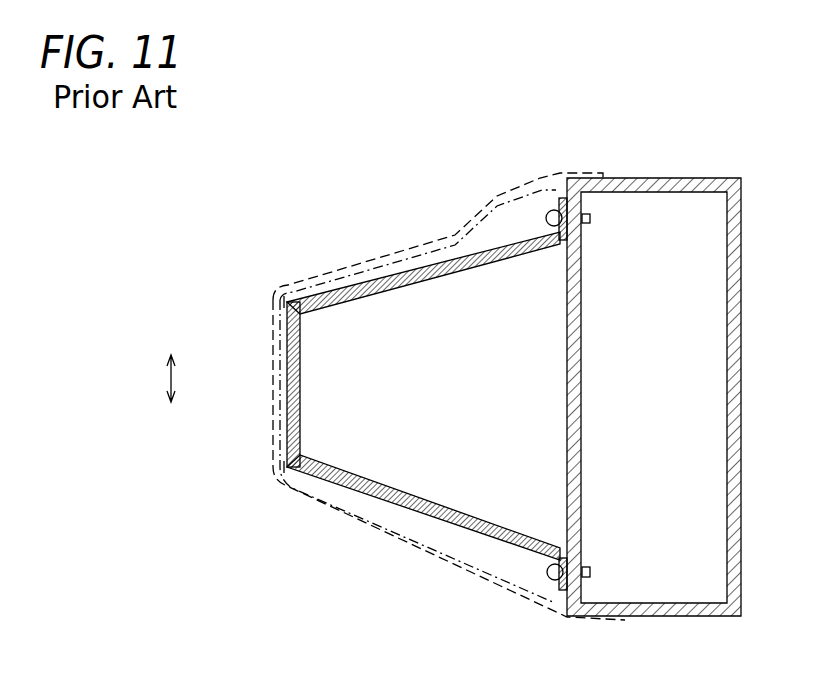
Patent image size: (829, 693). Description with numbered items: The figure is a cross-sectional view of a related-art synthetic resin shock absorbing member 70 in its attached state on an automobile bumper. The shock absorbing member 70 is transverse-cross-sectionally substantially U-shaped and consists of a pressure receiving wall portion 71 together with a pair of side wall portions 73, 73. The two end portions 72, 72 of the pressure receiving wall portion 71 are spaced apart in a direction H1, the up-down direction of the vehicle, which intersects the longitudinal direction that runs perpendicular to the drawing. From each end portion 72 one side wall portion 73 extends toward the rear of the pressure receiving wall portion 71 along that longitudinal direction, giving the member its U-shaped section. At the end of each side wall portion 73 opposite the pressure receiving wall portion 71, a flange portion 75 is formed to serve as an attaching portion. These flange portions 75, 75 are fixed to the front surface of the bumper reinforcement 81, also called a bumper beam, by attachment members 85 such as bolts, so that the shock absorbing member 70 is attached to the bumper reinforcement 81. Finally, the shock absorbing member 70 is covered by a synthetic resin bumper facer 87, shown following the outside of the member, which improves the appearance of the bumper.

The synthetic resin shock absorbing member 70 is at (300, 273).
The pressure receiving wall portion 71 is at (292, 378).
The end portion of pressure receiving wall portion 72 is at (284, 301).
The side wall portion 73 is at (353, 290).
The flange portion 75 is at (561, 197).
The bumper reinforcement 81 is at (677, 178).
The attachment member 85 is at (549, 213).
The synthetic resin bumper facer 87 is at (425, 247).
The direction intersecting with longitudinal direction H1 is at (150, 378).